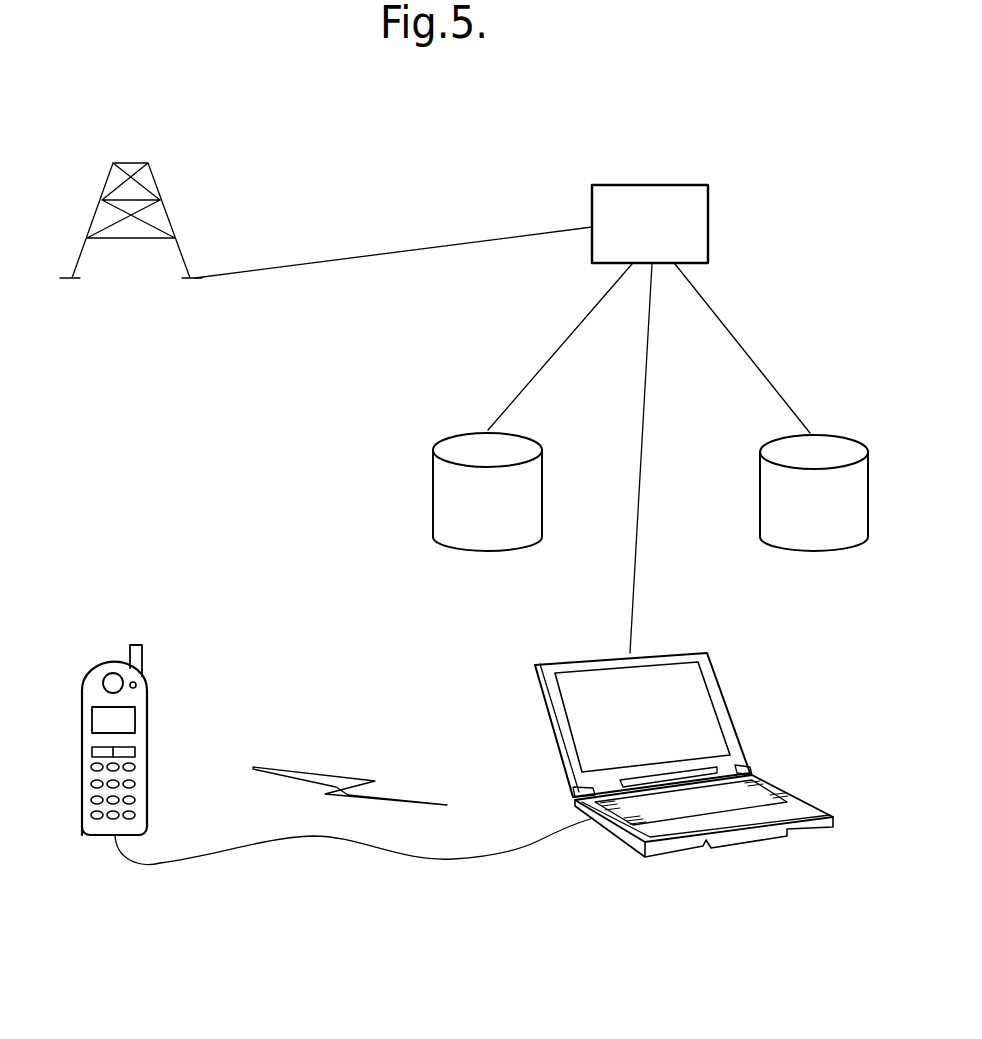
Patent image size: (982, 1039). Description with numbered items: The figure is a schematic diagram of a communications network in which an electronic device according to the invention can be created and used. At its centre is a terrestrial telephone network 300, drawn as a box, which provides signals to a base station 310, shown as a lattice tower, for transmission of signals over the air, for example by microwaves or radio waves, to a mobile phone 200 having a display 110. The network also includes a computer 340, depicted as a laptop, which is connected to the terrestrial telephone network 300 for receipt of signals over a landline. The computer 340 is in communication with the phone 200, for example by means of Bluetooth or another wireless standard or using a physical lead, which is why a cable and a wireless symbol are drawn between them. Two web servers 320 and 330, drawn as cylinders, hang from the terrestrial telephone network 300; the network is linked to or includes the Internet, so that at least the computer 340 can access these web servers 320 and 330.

The base station 310 is at (127, 163).
The terrestrial telephone network 300 is at (655, 190).
The web server 320 is at (487, 535).
The web server 330 is at (833, 528).
The mobile phone 200 is at (168, 740).
The display 110 is at (132, 711).
The computer 340 is at (737, 822).